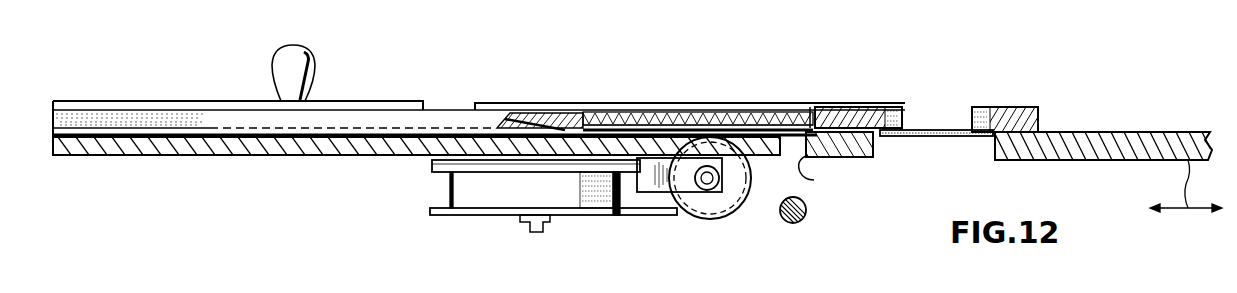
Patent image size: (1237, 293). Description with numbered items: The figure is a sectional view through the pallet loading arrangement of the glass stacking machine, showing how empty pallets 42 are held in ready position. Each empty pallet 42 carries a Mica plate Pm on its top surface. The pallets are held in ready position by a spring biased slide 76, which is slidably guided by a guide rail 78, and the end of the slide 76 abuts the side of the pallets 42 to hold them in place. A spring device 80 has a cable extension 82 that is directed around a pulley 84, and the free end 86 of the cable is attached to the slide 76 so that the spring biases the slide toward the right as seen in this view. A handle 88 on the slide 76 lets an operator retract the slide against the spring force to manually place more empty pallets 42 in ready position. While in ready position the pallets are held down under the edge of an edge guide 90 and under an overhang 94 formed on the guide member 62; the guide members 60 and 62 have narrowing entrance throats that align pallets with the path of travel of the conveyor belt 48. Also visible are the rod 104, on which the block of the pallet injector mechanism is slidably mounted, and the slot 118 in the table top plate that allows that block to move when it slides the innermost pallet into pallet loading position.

The guide rail 78 is at (398, 103).
The spring biased slide 76 is at (462, 113).
The handle 88 is at (312, 56).
The free end 86 is at (560, 118).
The edge guide 90 is at (605, 112).
The empty pallet 42 is at (640, 114).
The Mica plate Pm is at (683, 112).
The overhang 94 is at (813, 107).
The guide member 62 is at (882, 107).
The conveyor belt 48 is at (943, 130).
The guide member 60 is at (978, 110).
The spring device 80 is at (450, 192).
The cable extension 82 is at (667, 216).
The pulley 84 is at (727, 202).
The slot 118 is at (819, 172).
The rod 104 is at (806, 210).